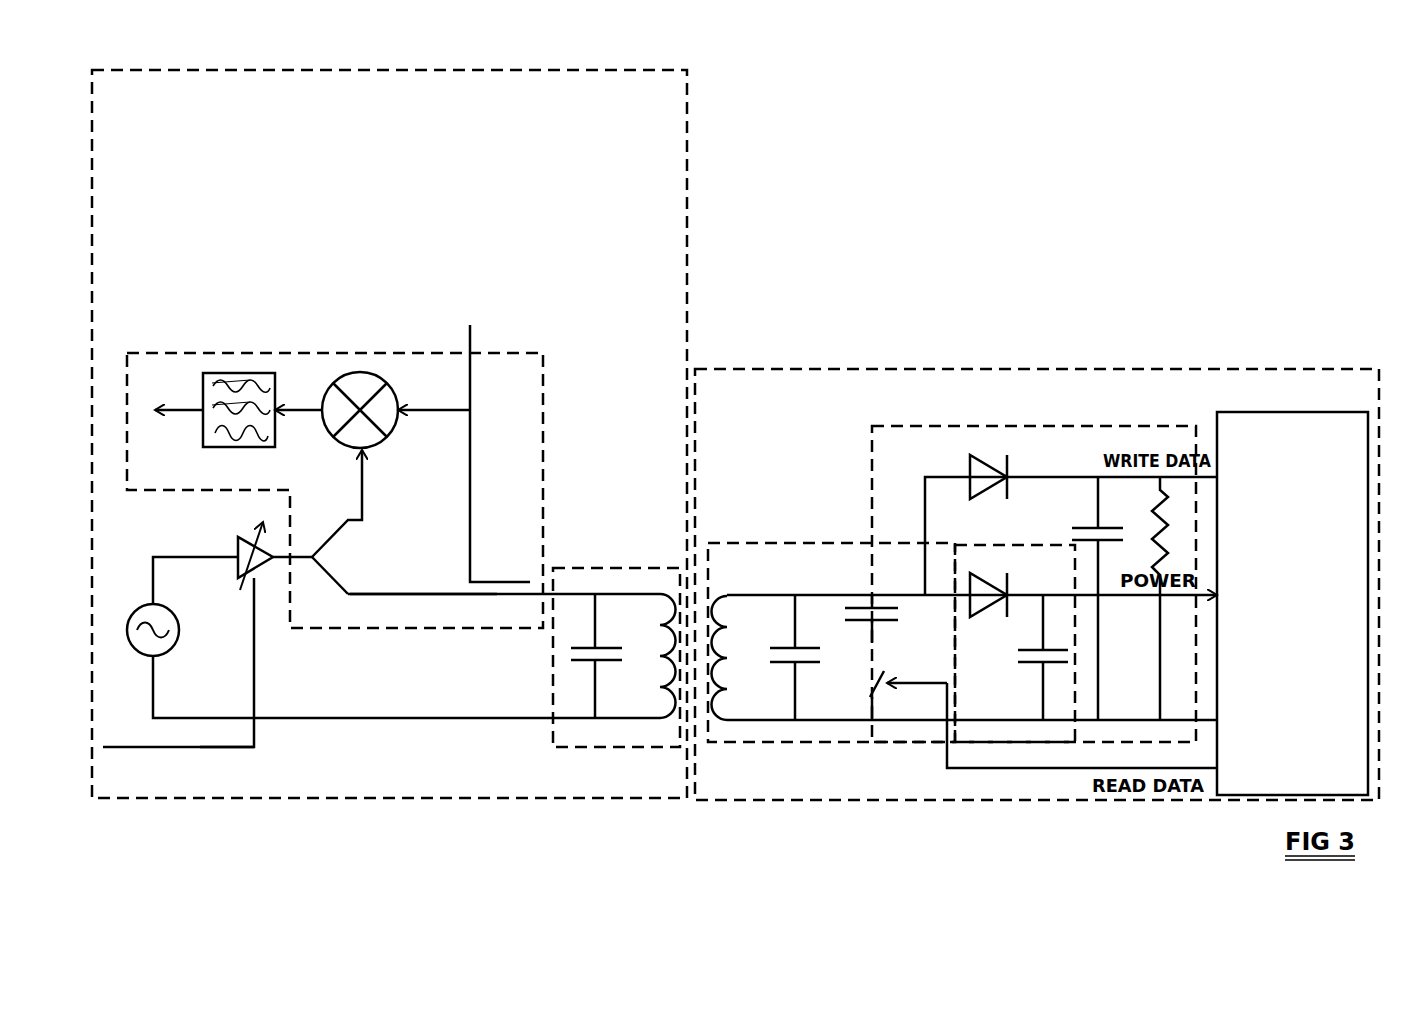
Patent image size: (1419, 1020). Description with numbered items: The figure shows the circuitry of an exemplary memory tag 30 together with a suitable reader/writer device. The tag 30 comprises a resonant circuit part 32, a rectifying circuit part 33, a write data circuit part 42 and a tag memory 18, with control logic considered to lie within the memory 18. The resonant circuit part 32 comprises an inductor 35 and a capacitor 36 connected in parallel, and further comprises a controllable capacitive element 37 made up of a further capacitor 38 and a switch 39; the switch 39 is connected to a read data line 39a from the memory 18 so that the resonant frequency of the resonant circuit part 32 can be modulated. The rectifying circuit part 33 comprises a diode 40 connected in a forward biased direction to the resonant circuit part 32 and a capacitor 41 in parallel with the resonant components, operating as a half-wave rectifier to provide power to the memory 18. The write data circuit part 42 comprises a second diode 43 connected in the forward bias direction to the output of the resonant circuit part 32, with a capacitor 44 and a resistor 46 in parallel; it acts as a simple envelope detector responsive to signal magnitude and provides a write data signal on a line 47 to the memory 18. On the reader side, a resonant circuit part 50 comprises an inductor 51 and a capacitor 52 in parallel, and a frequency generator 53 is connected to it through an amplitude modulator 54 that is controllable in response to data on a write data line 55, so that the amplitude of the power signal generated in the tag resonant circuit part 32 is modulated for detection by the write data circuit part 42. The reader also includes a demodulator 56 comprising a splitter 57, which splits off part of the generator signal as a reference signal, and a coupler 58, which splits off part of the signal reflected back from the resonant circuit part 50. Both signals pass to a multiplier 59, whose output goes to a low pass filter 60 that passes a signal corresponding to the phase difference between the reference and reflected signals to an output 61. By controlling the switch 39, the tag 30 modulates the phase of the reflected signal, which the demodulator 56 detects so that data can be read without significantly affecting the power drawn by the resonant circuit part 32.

The tag memory 18 is at (1352, 686).
The memory tag 30 is at (1024, 802).
The resonant circuit part 32 is at (752, 745).
The rectifying circuit part 33 is at (1000, 744).
The inductor L2 35 is at (712, 598).
The capacitor C2 36 is at (800, 665).
The controllable capacitive element 37 is at (868, 643).
The capacitor C3 38 is at (862, 606).
The switch S1 39 is at (870, 700).
The read data line 39a is at (1138, 770).
The diode D1 40 is at (987, 575).
The capacitor C4 41 is at (1050, 665).
The write data circuit part 42 is at (1168, 425).
The diode D2 43 is at (988, 455).
The capacitor C5 44 is at (1090, 528).
The resistor R1 46 is at (1157, 490).
The write data line 47 is at (1205, 480).
The resonant circuit part 50 is at (608, 747).
The inductor L1 51 is at (640, 700).
The capacitor C1 52 is at (590, 662).
The frequency generator 53 is at (128, 640).
The amplitude modulator 54 is at (263, 580).
The write data line 55 is at (200, 747).
The demodulator 56 is at (543, 400).
The splitter 57 is at (328, 575).
The coupler 58 is at (497, 594).
The multiplier 59 is at (389, 381).
The low pass filter 60 is at (217, 373).
The output 61 is at (178, 405).